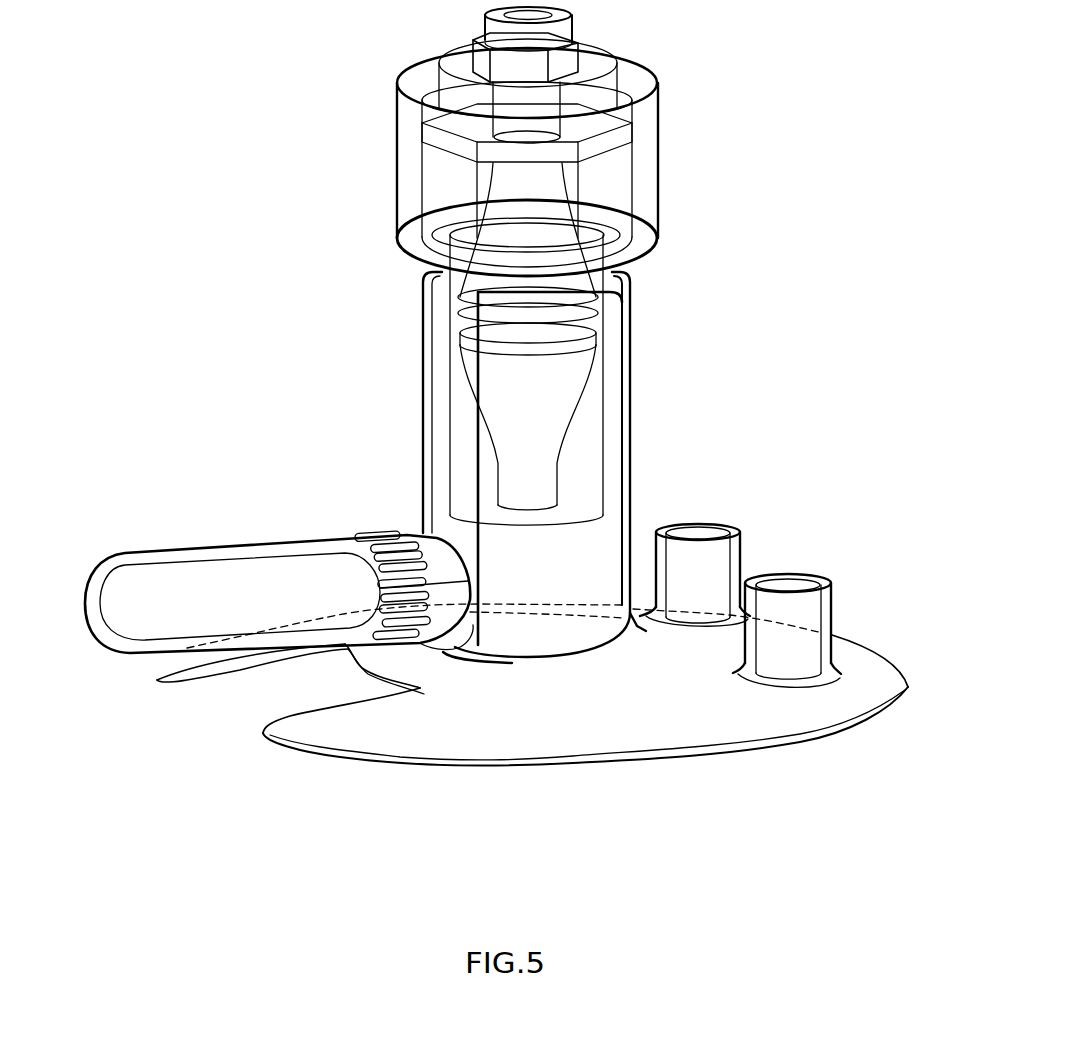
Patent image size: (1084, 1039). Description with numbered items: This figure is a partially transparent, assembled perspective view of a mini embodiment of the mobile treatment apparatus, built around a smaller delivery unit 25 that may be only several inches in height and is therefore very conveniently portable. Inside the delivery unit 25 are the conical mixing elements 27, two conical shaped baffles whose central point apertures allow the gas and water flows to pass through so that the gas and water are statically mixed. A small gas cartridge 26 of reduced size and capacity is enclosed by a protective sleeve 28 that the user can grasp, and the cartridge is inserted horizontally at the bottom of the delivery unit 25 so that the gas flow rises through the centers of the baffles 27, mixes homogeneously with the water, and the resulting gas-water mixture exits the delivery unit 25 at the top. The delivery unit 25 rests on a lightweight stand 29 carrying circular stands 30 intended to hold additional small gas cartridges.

The delivery unit 25 is at (750, 214).
The gas cartridge 26 is at (165, 580).
The conical mixing elements 27 is at (478, 280).
The protective sleeve 28 is at (250, 552).
The lightweight stand 29 is at (776, 722).
The circular stands 30 is at (788, 585).